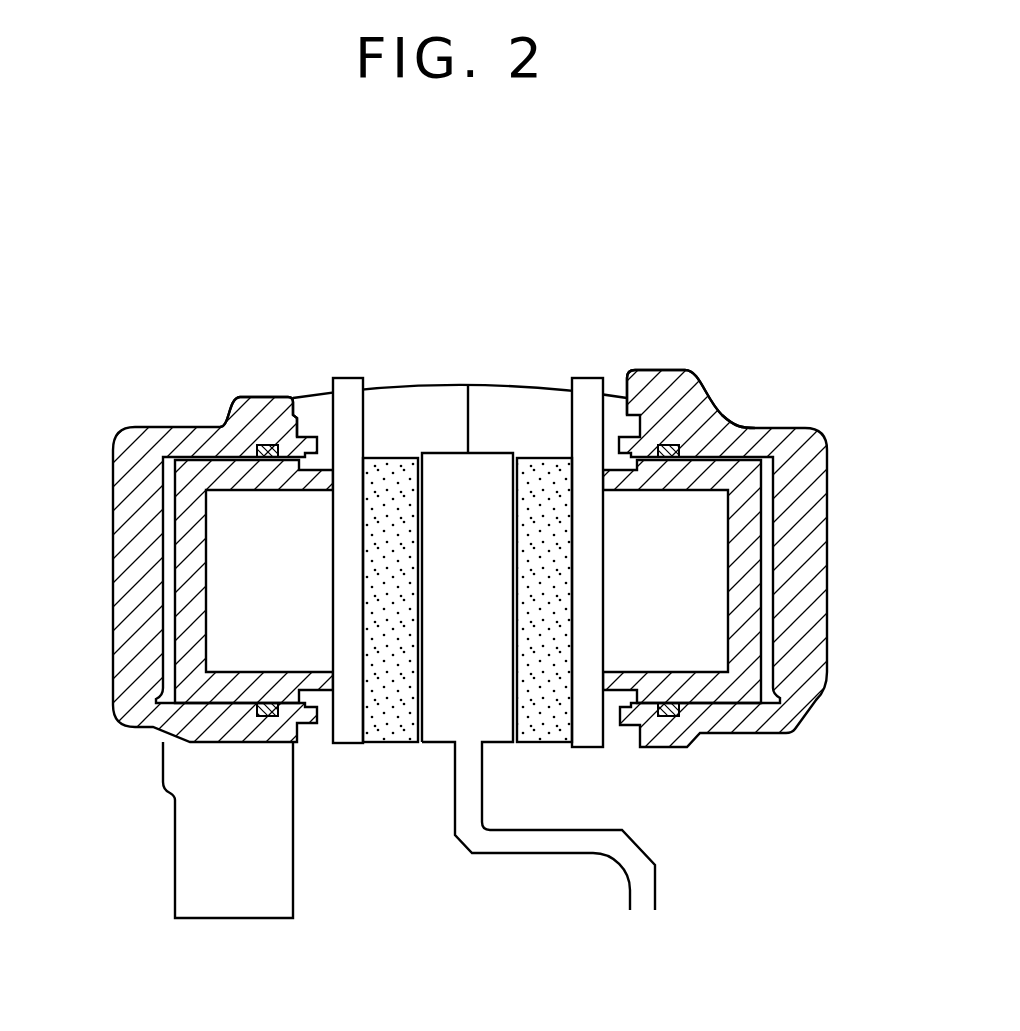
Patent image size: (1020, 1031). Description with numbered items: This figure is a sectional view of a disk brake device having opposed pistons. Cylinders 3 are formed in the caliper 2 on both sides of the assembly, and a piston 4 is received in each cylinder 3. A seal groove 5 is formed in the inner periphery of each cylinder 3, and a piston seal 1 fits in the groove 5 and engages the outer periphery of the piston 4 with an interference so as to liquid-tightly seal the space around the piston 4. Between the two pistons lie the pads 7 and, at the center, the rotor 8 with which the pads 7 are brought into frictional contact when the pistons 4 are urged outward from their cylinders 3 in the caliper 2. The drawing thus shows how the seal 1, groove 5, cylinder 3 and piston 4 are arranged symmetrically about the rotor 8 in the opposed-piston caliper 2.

The piston seal 1 is at (260, 443).
The caliper 2 is at (277, 413).
The cylinder 3 is at (150, 460).
The piston 4 is at (183, 635).
The seal groove 5 is at (263, 708).
The pad 7 is at (547, 480).
The rotor 8 is at (472, 830).